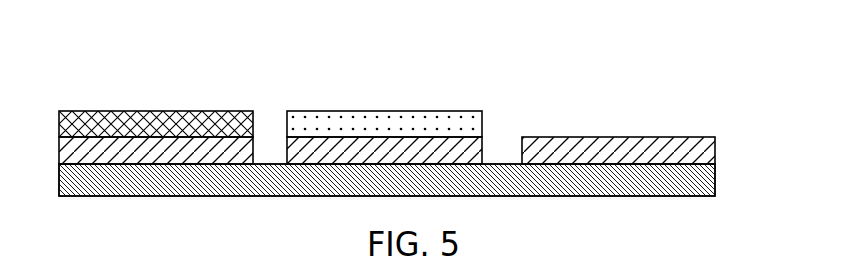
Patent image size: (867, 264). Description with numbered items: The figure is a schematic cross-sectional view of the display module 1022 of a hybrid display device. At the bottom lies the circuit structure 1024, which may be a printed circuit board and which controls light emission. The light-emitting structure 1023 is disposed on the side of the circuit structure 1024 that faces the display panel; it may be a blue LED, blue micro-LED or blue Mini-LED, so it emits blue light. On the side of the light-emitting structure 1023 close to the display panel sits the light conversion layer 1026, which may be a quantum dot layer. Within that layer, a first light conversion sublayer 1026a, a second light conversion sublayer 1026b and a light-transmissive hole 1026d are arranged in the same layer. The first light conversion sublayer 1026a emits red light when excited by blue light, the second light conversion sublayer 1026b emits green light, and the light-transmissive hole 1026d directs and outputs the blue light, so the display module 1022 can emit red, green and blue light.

The display module 1022 is at (89, 36).
The light-emitting structure 1023 is at (715, 150).
The circuit structure 1024 is at (715, 184).
The light conversion layer 1026 is at (383, 54).
The first light conversion sublayer 1026a is at (150, 119).
The second light conversion sublayer 1026b is at (373, 119).
The light-transmissive hole 1026d is at (621, 114).